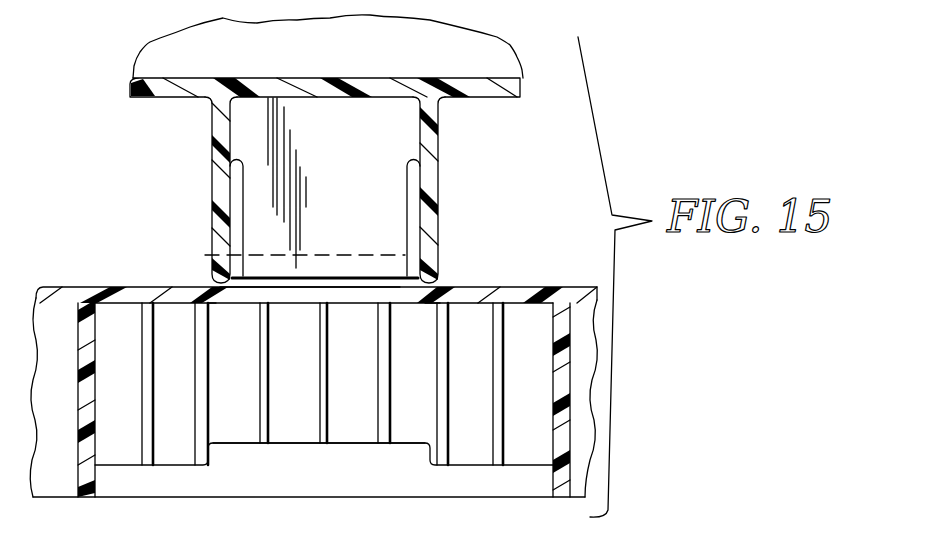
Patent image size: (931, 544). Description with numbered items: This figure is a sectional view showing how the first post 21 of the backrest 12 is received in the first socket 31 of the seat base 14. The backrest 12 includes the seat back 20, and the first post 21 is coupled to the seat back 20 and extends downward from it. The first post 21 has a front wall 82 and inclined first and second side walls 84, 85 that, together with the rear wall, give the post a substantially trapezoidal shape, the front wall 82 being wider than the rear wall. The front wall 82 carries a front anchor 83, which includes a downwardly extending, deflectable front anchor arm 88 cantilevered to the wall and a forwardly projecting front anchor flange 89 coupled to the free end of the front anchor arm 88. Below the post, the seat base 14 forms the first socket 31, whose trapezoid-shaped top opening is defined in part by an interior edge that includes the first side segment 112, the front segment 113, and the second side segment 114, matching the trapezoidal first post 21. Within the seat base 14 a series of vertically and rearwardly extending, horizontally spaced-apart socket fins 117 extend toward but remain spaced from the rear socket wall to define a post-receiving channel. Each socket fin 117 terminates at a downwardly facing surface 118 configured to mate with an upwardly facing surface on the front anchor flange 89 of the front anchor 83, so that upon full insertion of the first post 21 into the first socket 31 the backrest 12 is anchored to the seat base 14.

The backrest 12 is at (505, 35).
The seat base 14 is at (314, 363).
The seat back 20 is at (133, 44).
The first post 21 is at (335, 190).
The first socket 31 is at (420, 377).
The front wall 82 is at (248, 128).
The front anchor 83 is at (313, 292).
The first side wall 84 is at (433, 217).
The second side wall 85 is at (215, 222).
The front anchor arm 88 is at (282, 237).
The front anchor flange 89 is at (210, 255).
The first side segment 112 is at (436, 294).
The front segment 113 is at (347, 297).
The second side segment 114 is at (212, 294).
The socket fins 117 is at (260, 358).
The downwardly facing surface 118 is at (263, 445).